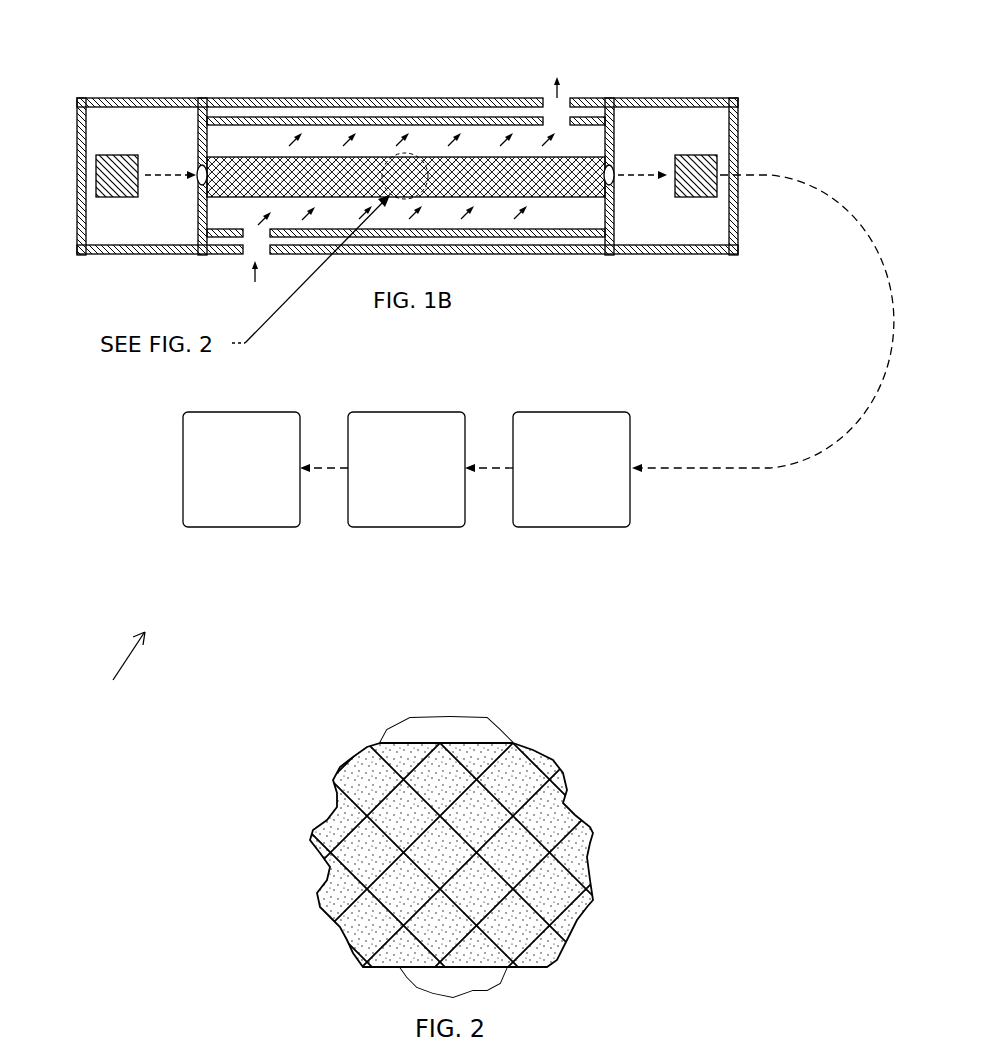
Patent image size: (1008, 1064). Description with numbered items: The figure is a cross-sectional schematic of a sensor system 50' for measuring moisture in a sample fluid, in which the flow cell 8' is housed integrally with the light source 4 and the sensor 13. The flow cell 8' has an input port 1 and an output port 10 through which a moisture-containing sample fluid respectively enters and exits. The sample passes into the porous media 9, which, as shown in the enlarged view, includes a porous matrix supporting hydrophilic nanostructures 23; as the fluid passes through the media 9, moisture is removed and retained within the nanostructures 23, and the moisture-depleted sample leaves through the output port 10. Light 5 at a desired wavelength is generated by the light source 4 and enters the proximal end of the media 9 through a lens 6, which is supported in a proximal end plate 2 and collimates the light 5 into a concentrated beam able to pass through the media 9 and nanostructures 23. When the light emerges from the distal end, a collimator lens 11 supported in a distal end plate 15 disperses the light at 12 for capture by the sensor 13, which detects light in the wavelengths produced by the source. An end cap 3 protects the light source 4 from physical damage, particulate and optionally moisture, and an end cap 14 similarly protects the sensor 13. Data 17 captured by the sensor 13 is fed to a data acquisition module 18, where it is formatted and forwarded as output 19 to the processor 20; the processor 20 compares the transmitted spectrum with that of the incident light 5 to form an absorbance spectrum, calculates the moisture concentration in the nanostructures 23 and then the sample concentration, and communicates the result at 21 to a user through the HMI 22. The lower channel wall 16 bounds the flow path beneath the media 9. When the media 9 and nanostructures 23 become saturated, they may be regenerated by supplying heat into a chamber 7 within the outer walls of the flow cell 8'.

In FIG. 1B, the input port 1 is at (249, 256).
In FIG. 1B, the proximal end plate 2 is at (204, 254).
In FIG. 1B, the end cap 3 is at (78, 251).
In FIG. 1B, the light source 4 is at (120, 155).
In FIG. 1B, the light 5 is at (167, 170).
In FIG. 1B, the lens 6 is at (198, 168).
In FIG. 1B, the chamber 7 is at (270, 109).
In FIG. 1B, the flow cell 8' is at (407, 72).
In FIG. 1B, the porous media 9 is at (487, 157).
In FIG. 1B, the output port 10 is at (565, 100).
In FIG. 1B, the collimator lens 11 is at (613, 167).
In FIG. 1B, the transmitted light 12 is at (642, 167).
In FIG. 1B, the sensor 13 is at (697, 155).
In FIG. 1B, the end cap 14 is at (738, 250).
In FIG. 1B, the distal end plate 15 is at (607, 253).
In FIG. 1B, the lower flow channel wall 16 is at (468, 217).
In FIG. 1B, the data 17 is at (842, 442).
In FIG. 1B, the data acquisition module 18 is at (630, 527).
In FIG. 1B, the output 19 is at (490, 470).
In FIG. 1B, the processor 20 is at (405, 527).
In FIG. 1B, the communication 21 is at (323, 470).
In FIG. 1B, the HMI 22 is at (183, 527).
In FIG. 2, the hydrophilic nanostructures 23 is at (480, 833).
In FIG. 1B, the sensor system 50' is at (116, 669).